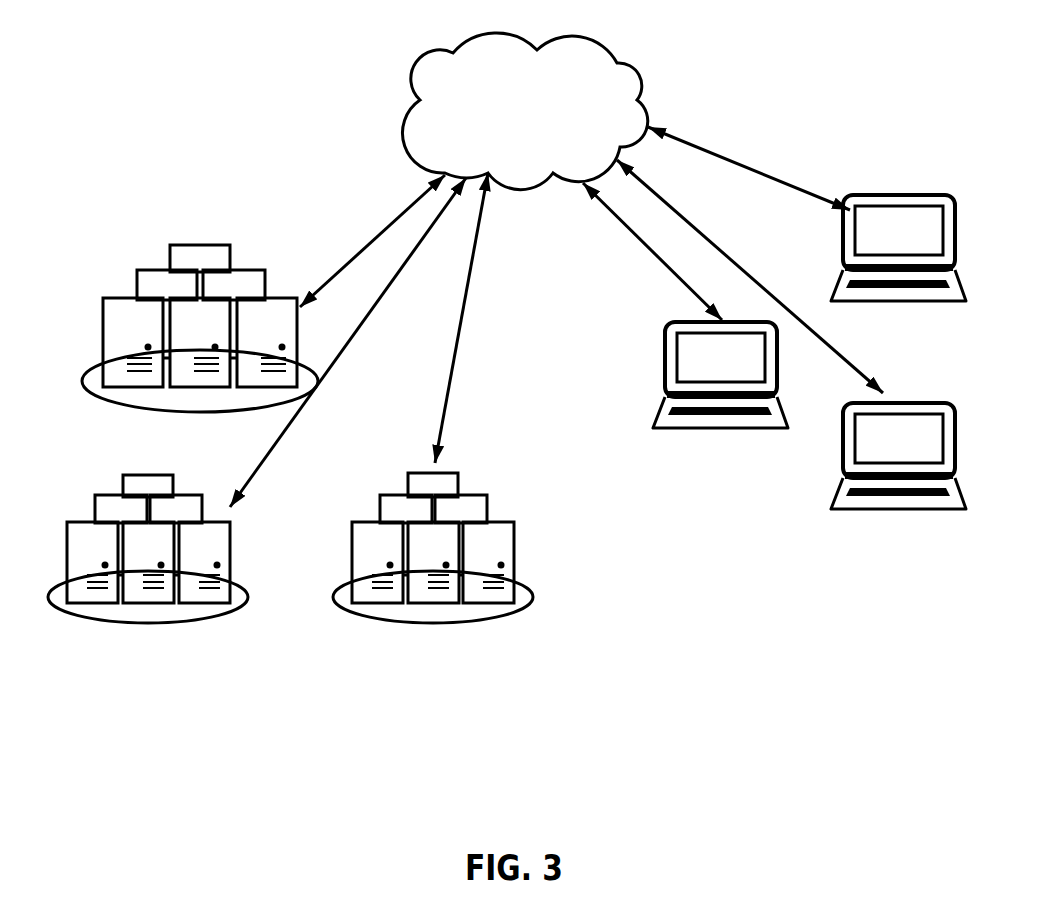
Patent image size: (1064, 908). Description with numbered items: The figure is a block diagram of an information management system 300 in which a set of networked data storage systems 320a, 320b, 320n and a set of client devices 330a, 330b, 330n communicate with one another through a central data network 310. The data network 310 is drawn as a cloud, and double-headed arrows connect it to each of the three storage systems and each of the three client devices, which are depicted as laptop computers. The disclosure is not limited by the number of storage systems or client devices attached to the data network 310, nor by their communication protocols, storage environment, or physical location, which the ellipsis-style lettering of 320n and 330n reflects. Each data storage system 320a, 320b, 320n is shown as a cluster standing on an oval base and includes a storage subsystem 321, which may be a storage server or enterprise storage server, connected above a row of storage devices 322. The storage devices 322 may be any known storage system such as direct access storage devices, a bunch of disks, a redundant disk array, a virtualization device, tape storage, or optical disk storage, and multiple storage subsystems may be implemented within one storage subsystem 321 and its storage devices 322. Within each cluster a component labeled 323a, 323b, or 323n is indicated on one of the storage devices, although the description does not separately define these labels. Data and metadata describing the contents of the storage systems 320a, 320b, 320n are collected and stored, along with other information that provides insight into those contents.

The information management system 300 is at (345, 98).
The data network 310 is at (524, 111).
The data storage system 320a is at (217, 343).
The data storage system 320b is at (172, 564).
The data storage system 320n is at (458, 563).
The storage subsystem 321 is at (200, 259).
The storage devices 322 is at (200, 342).
The data store 323a is at (277, 369).
The data store 323b is at (215, 588).
The data store 323n is at (500, 588).
The client device 330a is at (720, 398).
The client device 330b is at (898, 271).
The client device 330n is at (898, 479).